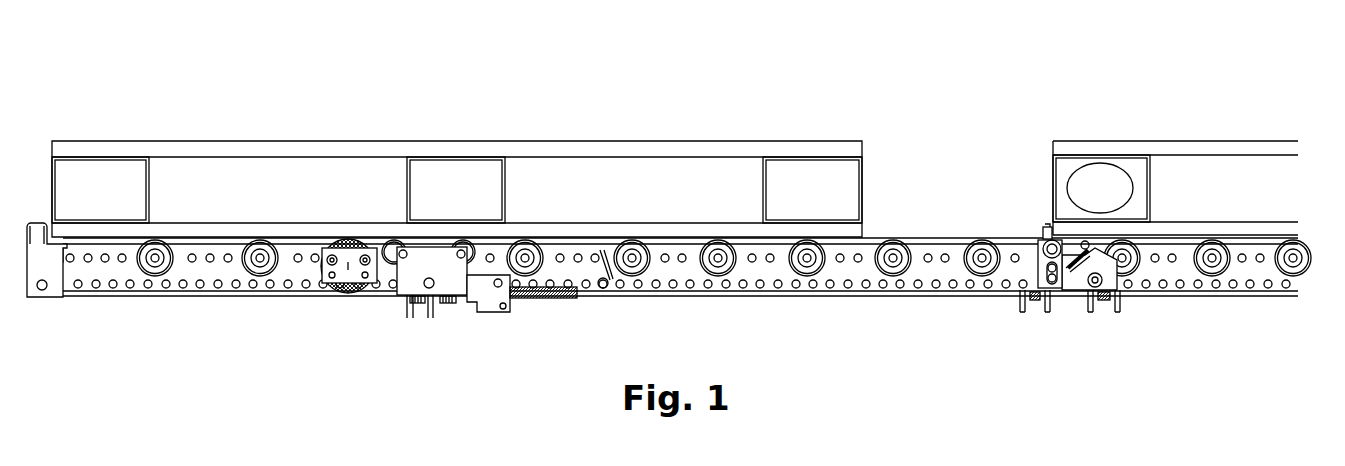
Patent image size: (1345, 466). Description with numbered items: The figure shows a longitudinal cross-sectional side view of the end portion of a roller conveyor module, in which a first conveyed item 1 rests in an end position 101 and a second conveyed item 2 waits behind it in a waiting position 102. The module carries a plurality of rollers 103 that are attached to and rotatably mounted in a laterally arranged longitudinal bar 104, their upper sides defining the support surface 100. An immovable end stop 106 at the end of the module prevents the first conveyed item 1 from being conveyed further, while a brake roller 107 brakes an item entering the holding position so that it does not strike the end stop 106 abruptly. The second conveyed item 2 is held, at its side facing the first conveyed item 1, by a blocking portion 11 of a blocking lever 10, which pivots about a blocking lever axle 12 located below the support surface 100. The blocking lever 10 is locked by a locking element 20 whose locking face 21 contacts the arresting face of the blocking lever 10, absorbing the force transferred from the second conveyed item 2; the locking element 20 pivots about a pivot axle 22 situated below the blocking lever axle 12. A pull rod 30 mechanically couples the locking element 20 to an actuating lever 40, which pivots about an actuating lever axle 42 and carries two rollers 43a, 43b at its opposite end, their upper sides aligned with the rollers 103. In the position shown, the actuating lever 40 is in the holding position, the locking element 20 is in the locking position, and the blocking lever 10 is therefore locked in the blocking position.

The first conveyed item 1 is at (462, 180).
The second conveyed item 2 is at (1072, 165).
The blocking lever 10 is at (1037, 262).
The blocking portion 11 is at (1048, 226).
The blocking lever axle 12 is at (1038, 245).
The locking element 20 is at (1073, 295).
The locking face 21 is at (1067, 294).
The pivot axle 22 is at (1105, 282).
The pull rod 30 is at (817, 291).
The actuating lever 40 is at (452, 290).
The actuating lever axle 42 is at (503, 293).
The roller 43a is at (390, 238).
The roller 43b is at (457, 240).
The support surface 100 is at (662, 215).
The end position 101 is at (457, 144).
The waiting position 102 is at (1160, 144).
The rollers 103 is at (260, 283).
The longitudinal bar 104 is at (295, 285).
The end stop 106 is at (44, 228).
The brake roller 107 is at (350, 293).